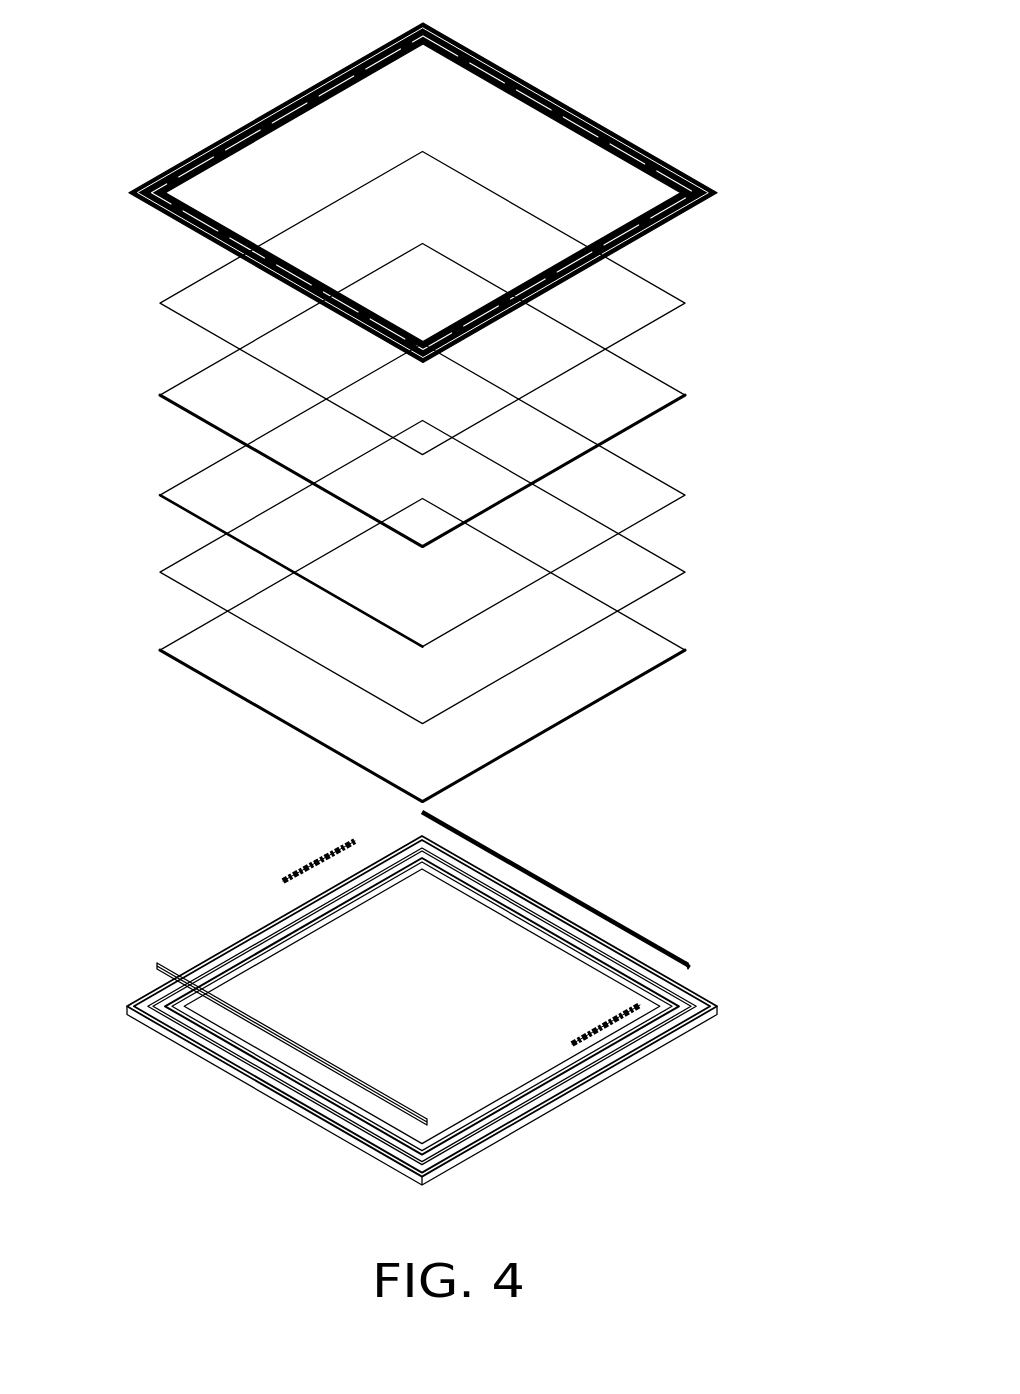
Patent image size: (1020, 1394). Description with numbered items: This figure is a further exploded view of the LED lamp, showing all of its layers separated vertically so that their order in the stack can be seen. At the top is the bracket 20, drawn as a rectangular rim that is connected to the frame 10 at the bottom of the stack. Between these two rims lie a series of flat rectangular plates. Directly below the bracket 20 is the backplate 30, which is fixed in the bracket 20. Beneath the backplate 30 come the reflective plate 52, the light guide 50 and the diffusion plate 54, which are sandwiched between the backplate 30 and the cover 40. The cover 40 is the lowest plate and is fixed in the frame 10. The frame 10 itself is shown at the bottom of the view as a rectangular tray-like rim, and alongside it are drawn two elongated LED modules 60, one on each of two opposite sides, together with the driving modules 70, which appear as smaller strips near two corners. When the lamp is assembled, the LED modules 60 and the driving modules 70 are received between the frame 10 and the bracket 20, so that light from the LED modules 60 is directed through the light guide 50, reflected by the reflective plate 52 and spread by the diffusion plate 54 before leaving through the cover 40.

The frame 10 is at (592, 1085).
The bracket 20 is at (175, 165).
The backplate 30 is at (210, 307).
The cover 40 is at (195, 648).
The light guide 50 is at (205, 494).
The reflective plate 52 is at (188, 385).
The diffusion plate 54 is at (200, 568).
The LED module 60 is at (557, 888).
The driving module 70 is at (605, 1025).